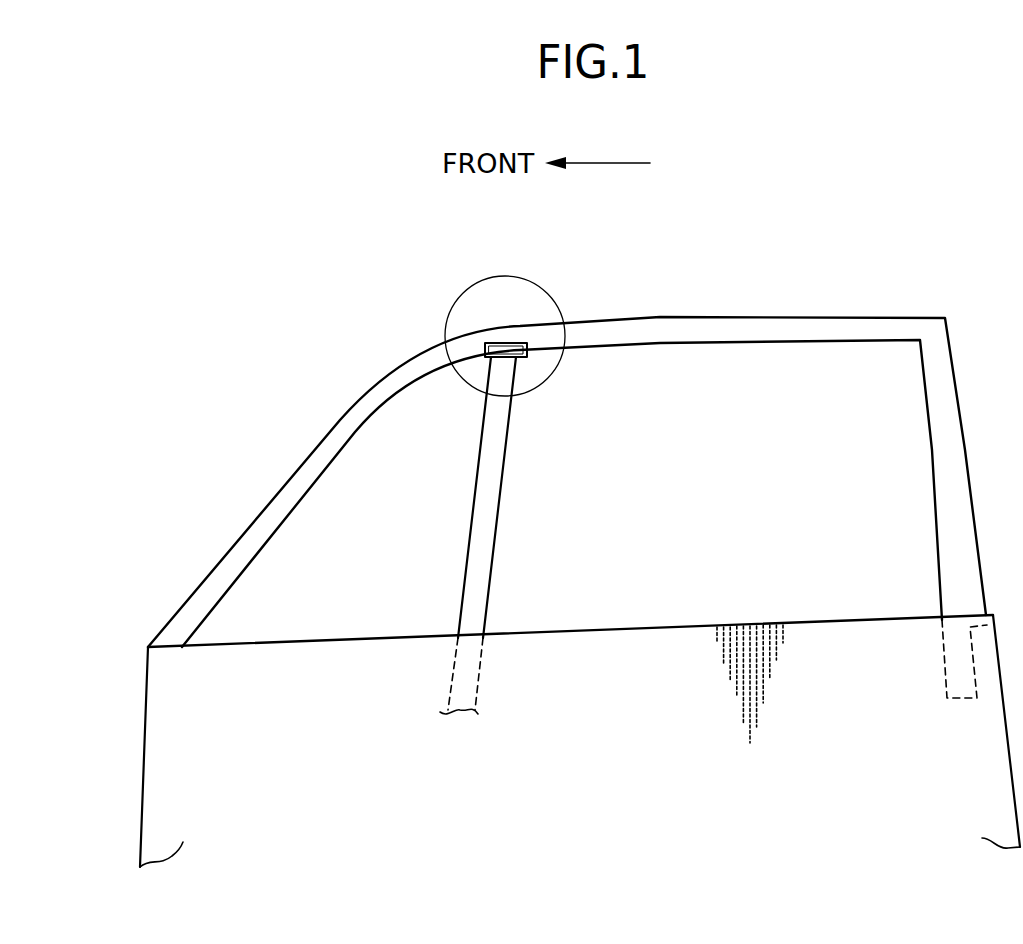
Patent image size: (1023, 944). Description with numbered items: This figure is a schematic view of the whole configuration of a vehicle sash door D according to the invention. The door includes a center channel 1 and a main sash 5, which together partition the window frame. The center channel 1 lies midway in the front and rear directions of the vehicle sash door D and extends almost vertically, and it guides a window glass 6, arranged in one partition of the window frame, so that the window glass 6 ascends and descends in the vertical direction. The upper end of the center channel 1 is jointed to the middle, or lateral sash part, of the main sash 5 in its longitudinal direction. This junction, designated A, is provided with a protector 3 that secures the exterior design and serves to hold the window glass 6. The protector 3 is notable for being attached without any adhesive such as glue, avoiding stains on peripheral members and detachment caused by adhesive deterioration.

The center channel 1 is at (490, 473).
The protector 3 is at (513, 347).
The main sash 5 is at (798, 333).
The window glass 6 is at (707, 500).
The junction A is at (535, 282).
The vehicle sash door D is at (957, 287).